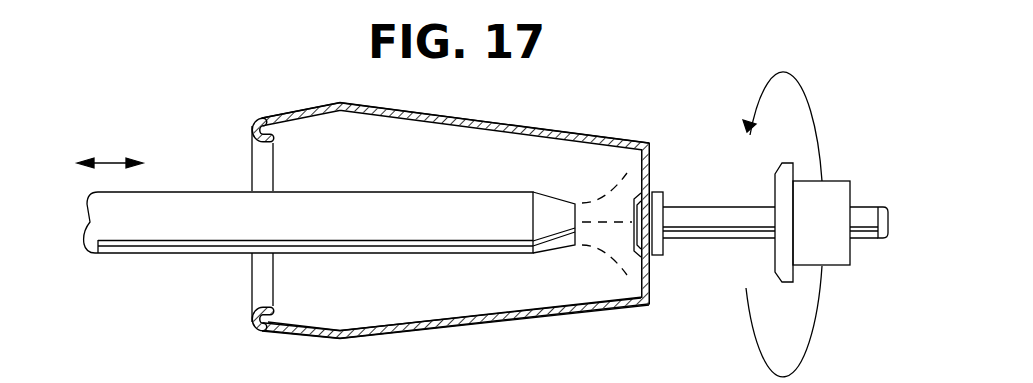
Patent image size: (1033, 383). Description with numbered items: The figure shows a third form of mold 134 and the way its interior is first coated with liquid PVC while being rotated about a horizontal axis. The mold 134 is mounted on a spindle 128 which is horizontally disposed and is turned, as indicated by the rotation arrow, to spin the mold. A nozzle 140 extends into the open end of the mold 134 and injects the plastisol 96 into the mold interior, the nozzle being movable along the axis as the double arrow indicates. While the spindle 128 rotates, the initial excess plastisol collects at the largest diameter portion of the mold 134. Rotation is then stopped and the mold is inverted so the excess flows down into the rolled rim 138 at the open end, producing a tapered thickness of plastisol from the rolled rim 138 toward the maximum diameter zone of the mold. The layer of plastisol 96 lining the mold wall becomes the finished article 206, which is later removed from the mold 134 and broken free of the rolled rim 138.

The mold 134 is at (610, 310).
The article 206 is at (422, 125).
The plastisol 96 is at (432, 315).
The rolled rim 138 is at (254, 125).
The nozzle 140 is at (170, 237).
The spindle 128 is at (702, 239).